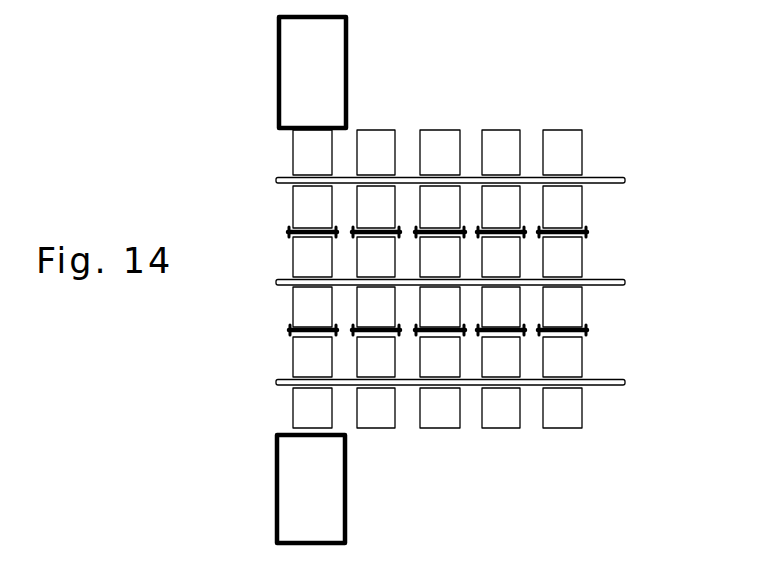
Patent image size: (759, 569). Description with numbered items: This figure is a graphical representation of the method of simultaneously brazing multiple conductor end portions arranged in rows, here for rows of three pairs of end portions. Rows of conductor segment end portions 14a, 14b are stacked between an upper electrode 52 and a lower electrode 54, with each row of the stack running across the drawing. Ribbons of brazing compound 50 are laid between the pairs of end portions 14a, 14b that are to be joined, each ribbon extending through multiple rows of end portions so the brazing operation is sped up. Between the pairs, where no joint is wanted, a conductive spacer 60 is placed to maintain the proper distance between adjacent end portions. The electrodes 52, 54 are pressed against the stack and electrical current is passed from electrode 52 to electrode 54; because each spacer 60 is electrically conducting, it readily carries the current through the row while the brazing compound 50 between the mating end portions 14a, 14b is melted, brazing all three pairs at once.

The electrode 52 is at (347, 44).
The electrode 54 is at (347, 526).
The brazing compound 50 is at (276, 180).
The conductive spacer 60 is at (288, 232).
The end portion 14a is at (587, 148).
The end portion 14b is at (587, 207).